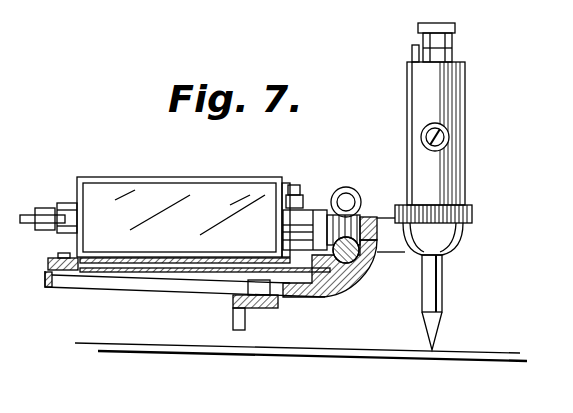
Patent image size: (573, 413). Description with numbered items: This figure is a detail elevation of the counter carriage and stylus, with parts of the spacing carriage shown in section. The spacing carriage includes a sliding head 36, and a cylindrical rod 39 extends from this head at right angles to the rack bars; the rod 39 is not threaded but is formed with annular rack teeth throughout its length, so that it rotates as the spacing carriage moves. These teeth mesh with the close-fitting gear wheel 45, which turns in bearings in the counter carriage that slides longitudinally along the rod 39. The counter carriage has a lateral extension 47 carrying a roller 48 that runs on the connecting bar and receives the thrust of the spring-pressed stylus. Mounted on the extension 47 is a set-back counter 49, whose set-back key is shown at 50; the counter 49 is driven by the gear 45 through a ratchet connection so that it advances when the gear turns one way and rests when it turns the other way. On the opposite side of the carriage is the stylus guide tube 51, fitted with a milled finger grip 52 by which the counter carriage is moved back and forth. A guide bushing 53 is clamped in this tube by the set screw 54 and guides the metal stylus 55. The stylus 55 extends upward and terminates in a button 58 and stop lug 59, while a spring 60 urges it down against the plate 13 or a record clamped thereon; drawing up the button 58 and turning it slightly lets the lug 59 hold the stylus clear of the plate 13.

The plate 13 is at (452, 361).
The sliding head 36 is at (247, 318).
The cylindrical rod 39 is at (362, 262).
The gear wheel 45 is at (339, 200).
The lateral extension 47 is at (158, 286).
The roller 48 is at (232, 298).
The set-back counter 49 is at (215, 178).
The set-back key 50 is at (36, 205).
The stylus guide tube 51 is at (458, 178).
The milled finger grip 52 is at (472, 213).
The guide bushing 53 is at (456, 240).
The set screw 54 is at (449, 137).
The stylus 55 is at (443, 292).
The button 58 is at (455, 27).
The stop lug 59 is at (452, 50).
The spring 60 is at (412, 50).